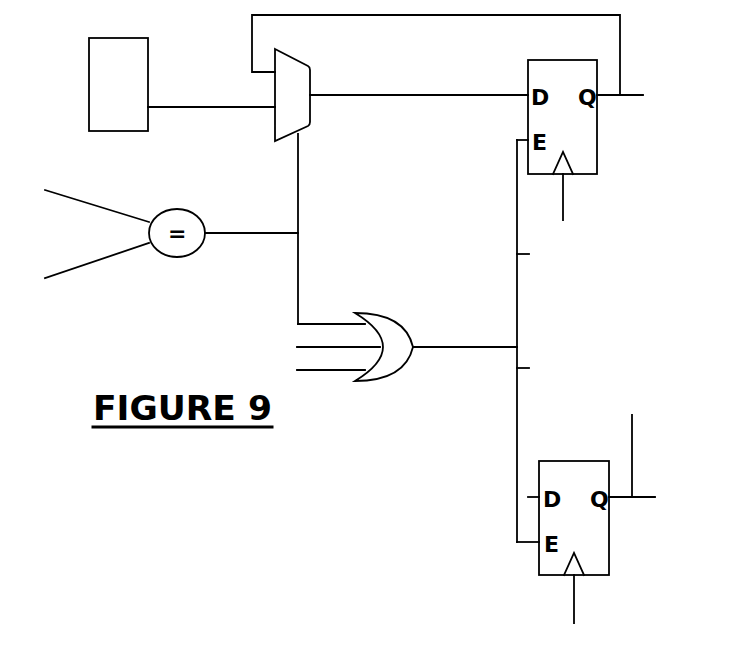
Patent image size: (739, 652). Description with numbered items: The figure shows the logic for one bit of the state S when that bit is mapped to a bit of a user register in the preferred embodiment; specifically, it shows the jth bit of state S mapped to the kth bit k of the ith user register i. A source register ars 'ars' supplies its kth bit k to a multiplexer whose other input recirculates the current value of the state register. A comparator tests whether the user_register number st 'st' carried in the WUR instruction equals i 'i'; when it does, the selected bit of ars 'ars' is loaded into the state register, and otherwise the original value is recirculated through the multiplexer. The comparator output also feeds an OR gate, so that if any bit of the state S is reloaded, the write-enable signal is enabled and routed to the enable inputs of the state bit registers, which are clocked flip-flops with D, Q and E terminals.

The ars register ars is at (118, 84).
The kth bit k is at (211, 96).
The user_register number st is at (88, 194).
The ith user register i is at (92, 261).